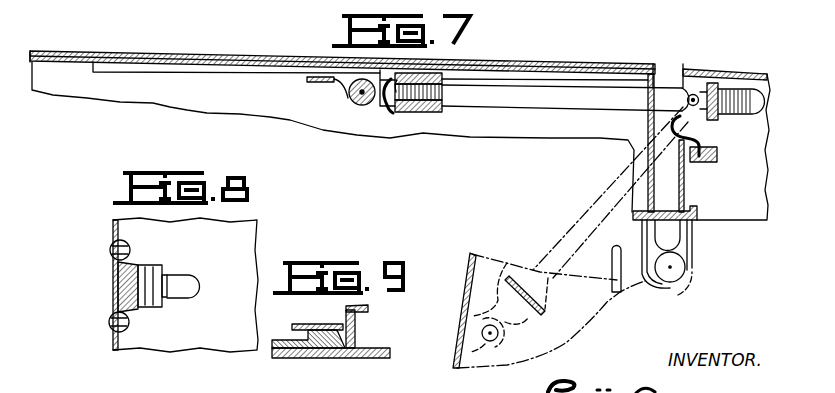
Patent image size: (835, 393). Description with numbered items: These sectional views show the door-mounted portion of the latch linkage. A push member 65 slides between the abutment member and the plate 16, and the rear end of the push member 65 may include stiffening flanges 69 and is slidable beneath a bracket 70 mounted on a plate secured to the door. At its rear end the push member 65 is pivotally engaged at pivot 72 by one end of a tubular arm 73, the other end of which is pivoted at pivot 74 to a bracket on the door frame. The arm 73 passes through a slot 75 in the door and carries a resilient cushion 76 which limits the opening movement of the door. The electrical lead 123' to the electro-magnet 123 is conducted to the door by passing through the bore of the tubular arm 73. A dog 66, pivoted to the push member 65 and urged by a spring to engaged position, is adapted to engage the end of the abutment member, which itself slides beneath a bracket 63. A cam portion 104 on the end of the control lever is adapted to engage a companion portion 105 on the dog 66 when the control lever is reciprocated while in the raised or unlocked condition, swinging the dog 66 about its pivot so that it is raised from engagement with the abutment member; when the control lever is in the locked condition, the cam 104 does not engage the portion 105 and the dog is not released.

In FIG. 7, the push member 65 is at (66, 70).
In FIG. 8, the push member 65 is at (114, 280).
In FIG. 7, the stiffening flanges 69 is at (172, 76).
In FIG. 7, the bracket 70 is at (305, 83).
In FIG. 8, the bracket 70 is at (133, 266).
In FIG. 7, the pivot 72 is at (349, 100).
In FIG. 7, the tubular arm 73 is at (500, 108).
In FIG. 7, the pivot 74 is at (685, 94).
In FIG. 7, the slot 75 is at (645, 143).
In FIG. 8, the slot 75 is at (184, 282).
In FIG. 7, the resilient cushion 76 is at (437, 112).
In FIG. 7, the electro-magnet 123 is at (376, 104).
In FIG. 7, the electrical lead 123' is at (710, 144).
In FIG. 9, the bracket 63 is at (310, 322).
In FIG. 9, the dog 66 is at (368, 306).
In FIG. 9, the cam portion 104 is at (338, 360).
In FIG. 9, the companion portion 105 is at (356, 330).
In FIG. 9, the plate 16 is at (382, 364).